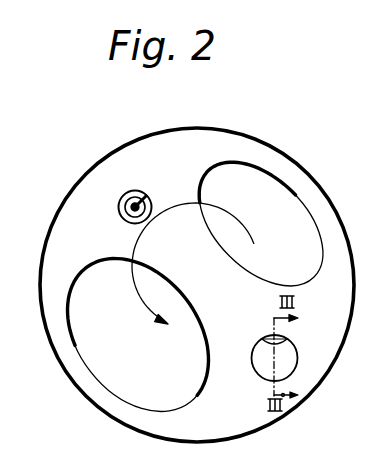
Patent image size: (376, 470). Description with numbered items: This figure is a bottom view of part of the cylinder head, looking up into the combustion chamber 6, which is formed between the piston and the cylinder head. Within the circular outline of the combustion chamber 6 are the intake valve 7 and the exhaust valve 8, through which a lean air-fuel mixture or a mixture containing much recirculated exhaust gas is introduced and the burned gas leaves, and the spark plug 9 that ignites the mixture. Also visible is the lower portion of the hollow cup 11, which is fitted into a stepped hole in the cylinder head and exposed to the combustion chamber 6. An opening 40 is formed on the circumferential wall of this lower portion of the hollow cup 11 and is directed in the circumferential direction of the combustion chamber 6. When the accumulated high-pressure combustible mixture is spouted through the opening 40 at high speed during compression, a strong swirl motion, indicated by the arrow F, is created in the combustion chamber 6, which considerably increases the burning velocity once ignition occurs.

The combustion chamber 6 is at (162, 250).
The intake valve 7 is at (122, 373).
The exhaust valve 8 is at (283, 191).
The spark plug 9 is at (124, 199).
The hollow cup 11 is at (290, 367).
The opening 40 is at (272, 338).
The arrow F is at (181, 204).